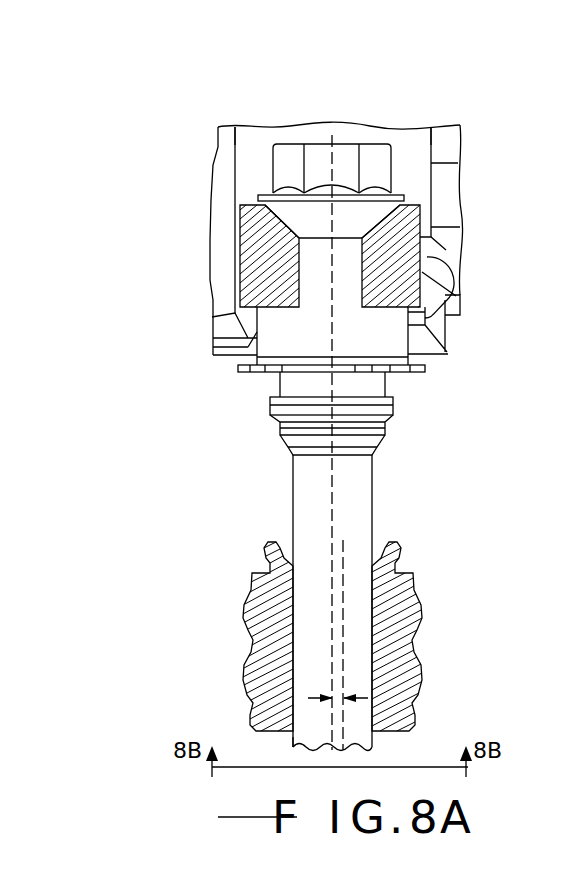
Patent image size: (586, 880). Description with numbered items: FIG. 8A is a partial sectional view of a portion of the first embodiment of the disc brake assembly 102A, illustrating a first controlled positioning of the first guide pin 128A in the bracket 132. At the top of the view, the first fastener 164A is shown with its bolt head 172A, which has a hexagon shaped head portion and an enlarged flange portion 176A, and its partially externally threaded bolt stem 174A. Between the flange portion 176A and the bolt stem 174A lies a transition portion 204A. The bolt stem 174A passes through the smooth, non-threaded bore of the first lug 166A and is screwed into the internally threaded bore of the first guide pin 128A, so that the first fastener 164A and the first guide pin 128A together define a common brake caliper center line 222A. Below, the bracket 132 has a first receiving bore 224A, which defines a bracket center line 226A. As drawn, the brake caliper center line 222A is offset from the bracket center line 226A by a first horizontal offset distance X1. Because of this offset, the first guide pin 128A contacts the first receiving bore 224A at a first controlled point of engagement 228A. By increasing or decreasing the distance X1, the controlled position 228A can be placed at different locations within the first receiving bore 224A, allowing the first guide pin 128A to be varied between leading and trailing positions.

The housing 102A is at (487, 150).
The first fastener 164A is at (405, 150).
The bolt head 172A is at (278, 169).
The flange portion 176A is at (278, 216).
The bolt stem 174A is at (310, 264).
The transition portion 204A is at (420, 212).
The first lug 166A is at (410, 273).
The first guide pin 128A is at (352, 488).
The bracket 132 is at (317, 636).
The first controlled point of engagement 228A is at (292, 643).
The first receiving bore 224A is at (382, 649).
The brake caliper center line 222A is at (330, 555).
The bracket center line 226A is at (347, 564).
The first horizontal offset distance X1 is at (337, 701).